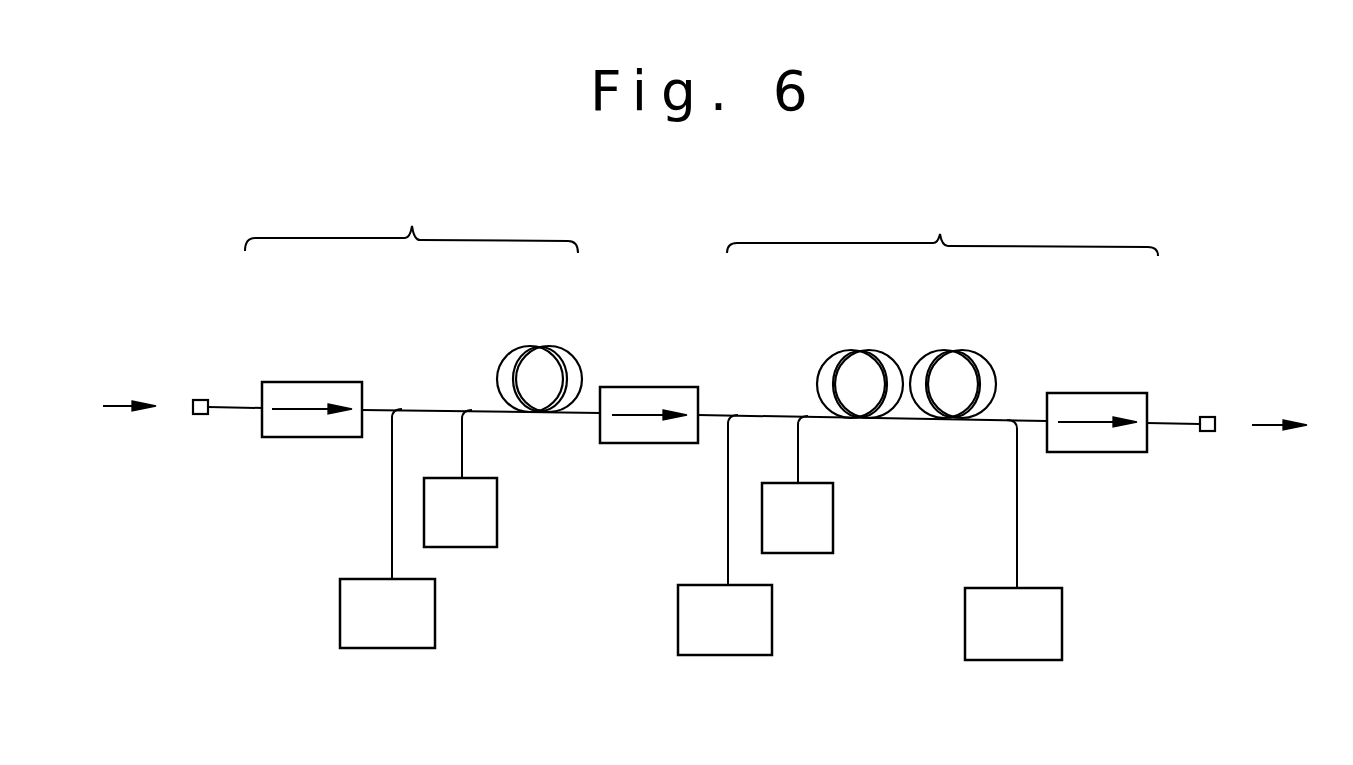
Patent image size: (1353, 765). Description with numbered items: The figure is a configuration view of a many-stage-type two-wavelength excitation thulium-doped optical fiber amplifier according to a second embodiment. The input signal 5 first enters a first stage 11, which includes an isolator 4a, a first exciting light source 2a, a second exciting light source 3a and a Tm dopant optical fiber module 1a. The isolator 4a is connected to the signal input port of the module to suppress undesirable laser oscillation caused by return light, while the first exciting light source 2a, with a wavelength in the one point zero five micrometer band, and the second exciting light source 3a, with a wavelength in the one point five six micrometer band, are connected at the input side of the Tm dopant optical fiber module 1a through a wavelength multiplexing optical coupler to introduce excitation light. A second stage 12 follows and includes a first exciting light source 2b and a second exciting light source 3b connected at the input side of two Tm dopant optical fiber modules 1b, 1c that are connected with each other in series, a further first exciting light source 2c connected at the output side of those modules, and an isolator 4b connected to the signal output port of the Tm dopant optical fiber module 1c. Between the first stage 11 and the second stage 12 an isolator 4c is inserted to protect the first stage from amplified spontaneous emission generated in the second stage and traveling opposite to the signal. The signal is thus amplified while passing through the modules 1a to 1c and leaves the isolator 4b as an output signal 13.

The Tm dopant optical fiber module 1a is at (510, 352).
The Tm dopant optical fiber module 1b is at (833, 353).
The Tm dopant optical fiber module 1c is at (985, 355).
The first exciting light source 2a is at (435, 618).
The first exciting light source 2b is at (772, 623).
The first exciting light source 2c is at (1062, 628).
The second exciting light source 3a is at (497, 516).
The second exciting light source 3b is at (833, 522).
The isolator 4a is at (313, 382).
The isolator 4b is at (1098, 393).
The isolator 4c is at (650, 387).
The input signal 5 is at (118, 405).
The first stage 11 is at (411, 223).
The second stage 12 is at (942, 228).
The output signal 13 is at (1265, 424).